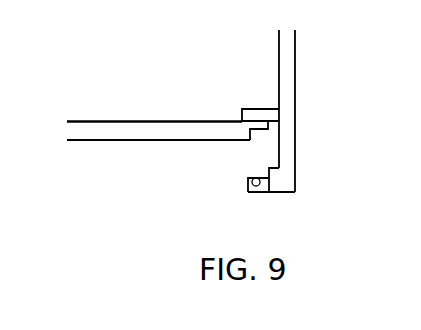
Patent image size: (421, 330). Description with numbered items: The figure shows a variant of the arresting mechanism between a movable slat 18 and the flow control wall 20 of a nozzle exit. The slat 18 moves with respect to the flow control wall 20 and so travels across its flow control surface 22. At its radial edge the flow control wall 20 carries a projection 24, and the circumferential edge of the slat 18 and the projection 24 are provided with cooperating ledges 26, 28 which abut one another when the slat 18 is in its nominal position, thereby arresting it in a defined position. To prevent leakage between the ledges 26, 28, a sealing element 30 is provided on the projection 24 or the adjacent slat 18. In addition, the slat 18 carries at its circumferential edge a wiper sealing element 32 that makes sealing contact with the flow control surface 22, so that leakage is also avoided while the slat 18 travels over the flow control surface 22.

The slat 18 is at (160, 128).
The flow control wall 20 is at (288, 73).
The flow control surface 22 is at (279, 60).
The projection 24 is at (280, 181).
The ledge 26 is at (251, 136).
The ledge 28 is at (249, 177).
The sealing element 30 is at (257, 187).
The wiper sealing element 32 is at (270, 122).